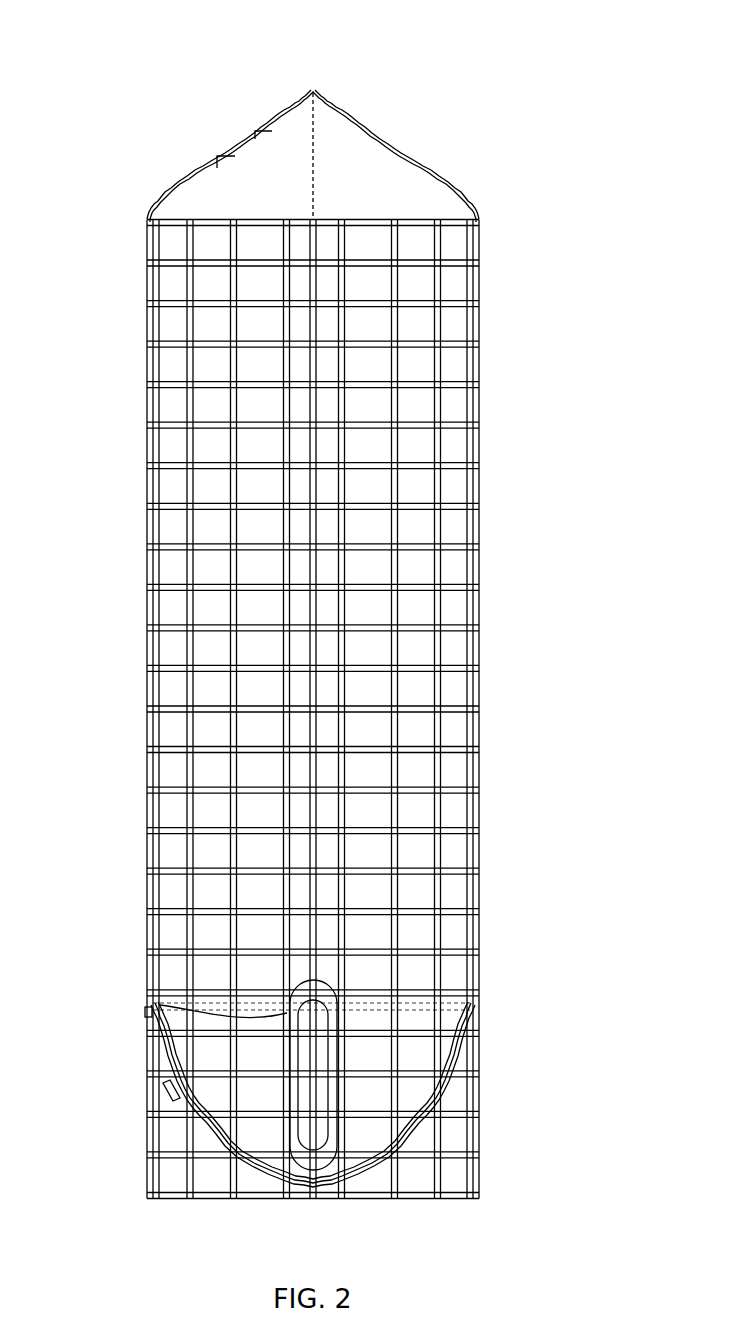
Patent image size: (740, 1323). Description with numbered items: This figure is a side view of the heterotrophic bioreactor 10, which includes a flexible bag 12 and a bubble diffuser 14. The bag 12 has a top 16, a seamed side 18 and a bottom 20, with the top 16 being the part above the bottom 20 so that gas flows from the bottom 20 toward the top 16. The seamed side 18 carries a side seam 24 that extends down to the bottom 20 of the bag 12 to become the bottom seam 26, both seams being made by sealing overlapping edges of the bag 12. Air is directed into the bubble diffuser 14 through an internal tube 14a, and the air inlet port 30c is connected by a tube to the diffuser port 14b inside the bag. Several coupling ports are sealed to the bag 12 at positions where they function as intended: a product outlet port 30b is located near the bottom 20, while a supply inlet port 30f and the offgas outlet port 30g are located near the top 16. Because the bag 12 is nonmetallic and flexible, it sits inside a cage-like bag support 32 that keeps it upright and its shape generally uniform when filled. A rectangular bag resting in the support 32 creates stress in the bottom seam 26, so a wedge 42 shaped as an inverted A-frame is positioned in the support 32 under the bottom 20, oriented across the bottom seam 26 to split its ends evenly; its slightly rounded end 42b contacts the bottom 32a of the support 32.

The bioreactor 10 is at (73, 22).
The bag 12 is at (158, 205).
The bubble diffuser 14 is at (330, 985).
The internal tube 14a is at (175, 1008).
The diffuser port 14b is at (297, 1010).
The top 16 is at (283, 106).
The seamed side 18 is at (410, 195).
The bottom 20 is at (413, 1130).
The side seam 24 is at (316, 140).
The bottom seam 26 is at (317, 1170).
The product outlet port 30b is at (168, 1087).
The air inlet port 30c is at (146, 1010).
The supply inlet port 30f is at (257, 132).
The offgas outlet port 30g is at (218, 163).
The bag support 32 is at (150, 438).
The bottom of the support 32a is at (397, 1200).
The wedge 42 is at (250, 1170).
The rounded end of the wedge 42b is at (311, 1186).